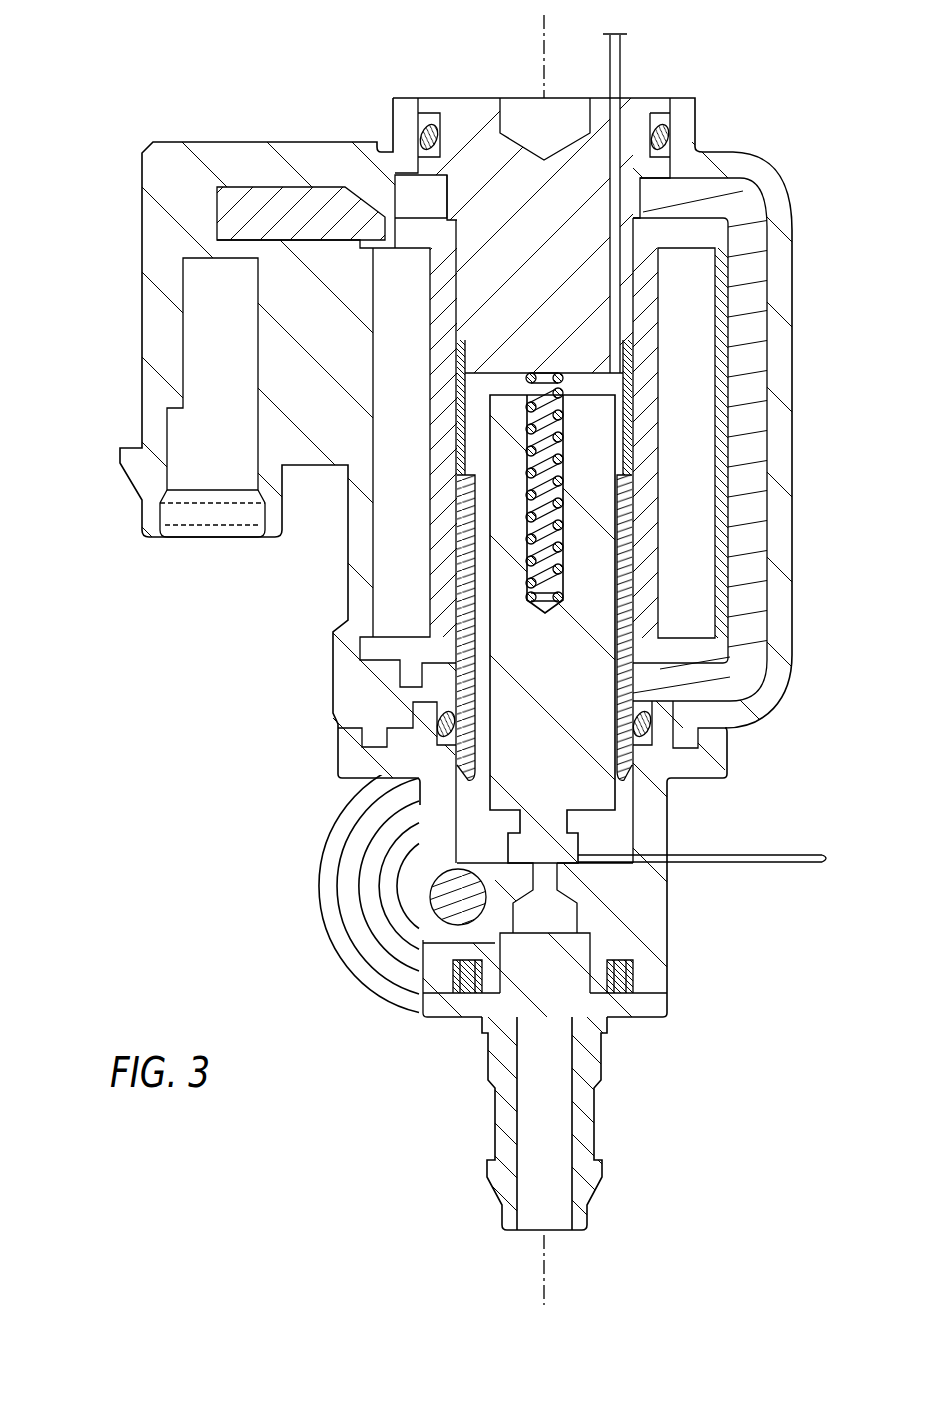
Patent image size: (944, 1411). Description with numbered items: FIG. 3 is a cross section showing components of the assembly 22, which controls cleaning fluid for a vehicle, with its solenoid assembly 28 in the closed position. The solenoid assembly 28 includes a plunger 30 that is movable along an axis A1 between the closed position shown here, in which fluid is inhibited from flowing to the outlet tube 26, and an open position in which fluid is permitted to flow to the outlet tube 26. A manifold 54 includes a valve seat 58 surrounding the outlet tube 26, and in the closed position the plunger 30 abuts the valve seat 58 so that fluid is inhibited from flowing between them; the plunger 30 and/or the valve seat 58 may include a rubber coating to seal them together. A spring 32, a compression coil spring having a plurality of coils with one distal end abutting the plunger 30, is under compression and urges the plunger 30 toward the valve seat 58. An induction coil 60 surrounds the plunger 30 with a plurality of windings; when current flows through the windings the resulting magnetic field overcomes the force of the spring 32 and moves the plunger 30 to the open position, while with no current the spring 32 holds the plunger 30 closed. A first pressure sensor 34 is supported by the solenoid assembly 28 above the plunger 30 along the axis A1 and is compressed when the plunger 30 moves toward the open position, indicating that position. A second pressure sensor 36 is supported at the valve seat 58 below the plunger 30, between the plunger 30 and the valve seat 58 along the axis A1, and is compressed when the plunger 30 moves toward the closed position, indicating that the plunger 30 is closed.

The assembly 22 is at (75, 167).
The outlet tube 26 is at (490, 1125).
The solenoid assembly 28 is at (748, 422).
The plunger 30 is at (557, 747).
The spring 32 is at (562, 510).
The first pressure sensor 34 is at (603, 375).
The second pressure sensor 36 is at (580, 873).
The manifold 54 is at (433, 822).
The valve seat 58 is at (562, 868).
The induction coil 60 is at (682, 317).
The axis A1 is at (541, 40).